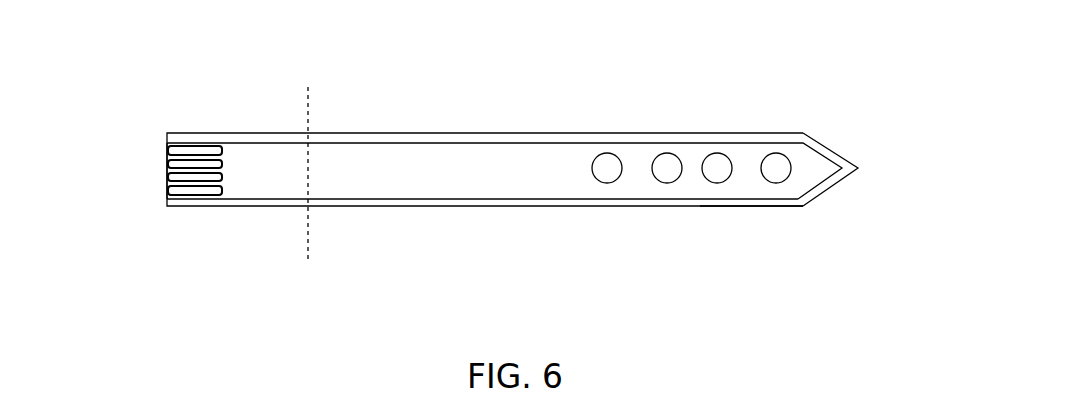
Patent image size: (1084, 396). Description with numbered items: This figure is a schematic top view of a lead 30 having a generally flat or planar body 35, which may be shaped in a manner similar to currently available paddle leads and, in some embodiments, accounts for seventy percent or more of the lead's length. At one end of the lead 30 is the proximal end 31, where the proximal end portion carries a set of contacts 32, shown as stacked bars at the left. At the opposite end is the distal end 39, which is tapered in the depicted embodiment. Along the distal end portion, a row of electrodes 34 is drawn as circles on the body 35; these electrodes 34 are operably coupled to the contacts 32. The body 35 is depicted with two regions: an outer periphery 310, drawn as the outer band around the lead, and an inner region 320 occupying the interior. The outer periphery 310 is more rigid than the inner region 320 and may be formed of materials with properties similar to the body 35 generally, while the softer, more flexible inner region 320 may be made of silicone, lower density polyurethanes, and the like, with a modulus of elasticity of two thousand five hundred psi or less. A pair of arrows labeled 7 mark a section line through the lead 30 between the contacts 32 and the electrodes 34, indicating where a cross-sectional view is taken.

The lead 30 is at (700, 61).
The proximal end 31 is at (167, 155).
The contacts 32 is at (195, 193).
The electrodes 34 is at (603, 168).
The generally flat or planar body 35 is at (422, 119).
The distal end 39 is at (858, 168).
The outer periphery 310 is at (757, 203).
The inner region 320 is at (545, 185).
The section line 7- 7 is at (308, 87).